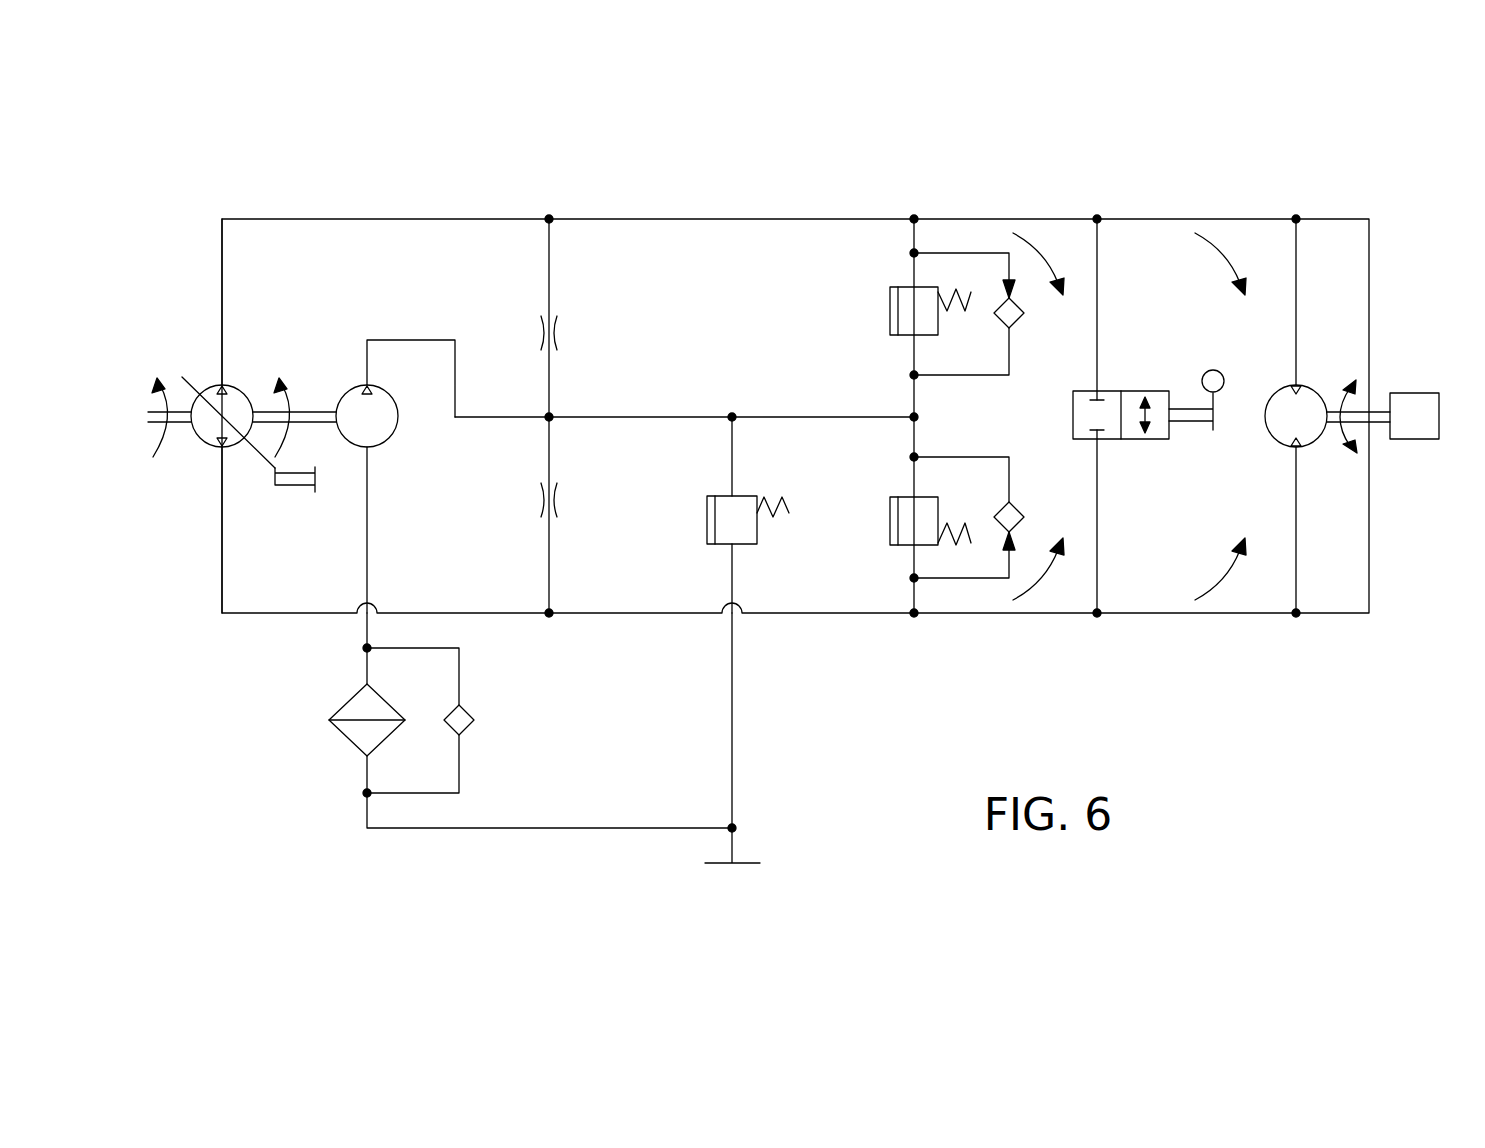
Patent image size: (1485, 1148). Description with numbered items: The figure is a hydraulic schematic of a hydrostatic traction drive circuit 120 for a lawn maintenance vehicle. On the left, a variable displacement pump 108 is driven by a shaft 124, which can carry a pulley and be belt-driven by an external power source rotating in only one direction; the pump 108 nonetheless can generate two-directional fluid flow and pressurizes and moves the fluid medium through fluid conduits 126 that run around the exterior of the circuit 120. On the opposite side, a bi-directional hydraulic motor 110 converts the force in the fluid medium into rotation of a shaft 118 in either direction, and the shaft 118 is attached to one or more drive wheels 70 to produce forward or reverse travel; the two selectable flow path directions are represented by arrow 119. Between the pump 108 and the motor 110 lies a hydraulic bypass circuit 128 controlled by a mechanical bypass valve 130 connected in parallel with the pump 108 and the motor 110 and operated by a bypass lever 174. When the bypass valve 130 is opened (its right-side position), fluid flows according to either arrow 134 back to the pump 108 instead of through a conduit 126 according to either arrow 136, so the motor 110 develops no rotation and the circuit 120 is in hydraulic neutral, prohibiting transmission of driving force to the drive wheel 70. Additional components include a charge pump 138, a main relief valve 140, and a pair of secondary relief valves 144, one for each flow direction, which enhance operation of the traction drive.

The hydrostatic traction drive circuit 120 is at (262, 170).
The fluid conduit 126 is at (430, 218).
The shaft 124 is at (160, 427).
The pump 108 is at (197, 438).
The charge pump 138 is at (395, 437).
The main relief valve 140 is at (707, 518).
The secondary relief valve 144 is at (890, 305).
The arrow 134 is at (1047, 252).
The hydraulic bypass circuit 128 is at (1140, 298).
The bypass valve 130 is at (1157, 440).
The bypass lever 174 is at (1204, 372).
The arrow 136 is at (1222, 250).
The hydraulic motor 110 is at (1318, 392).
The shaft 118 is at (1355, 423).
The arrow 119 is at (1340, 432).
The drive wheel 70 is at (1413, 393).